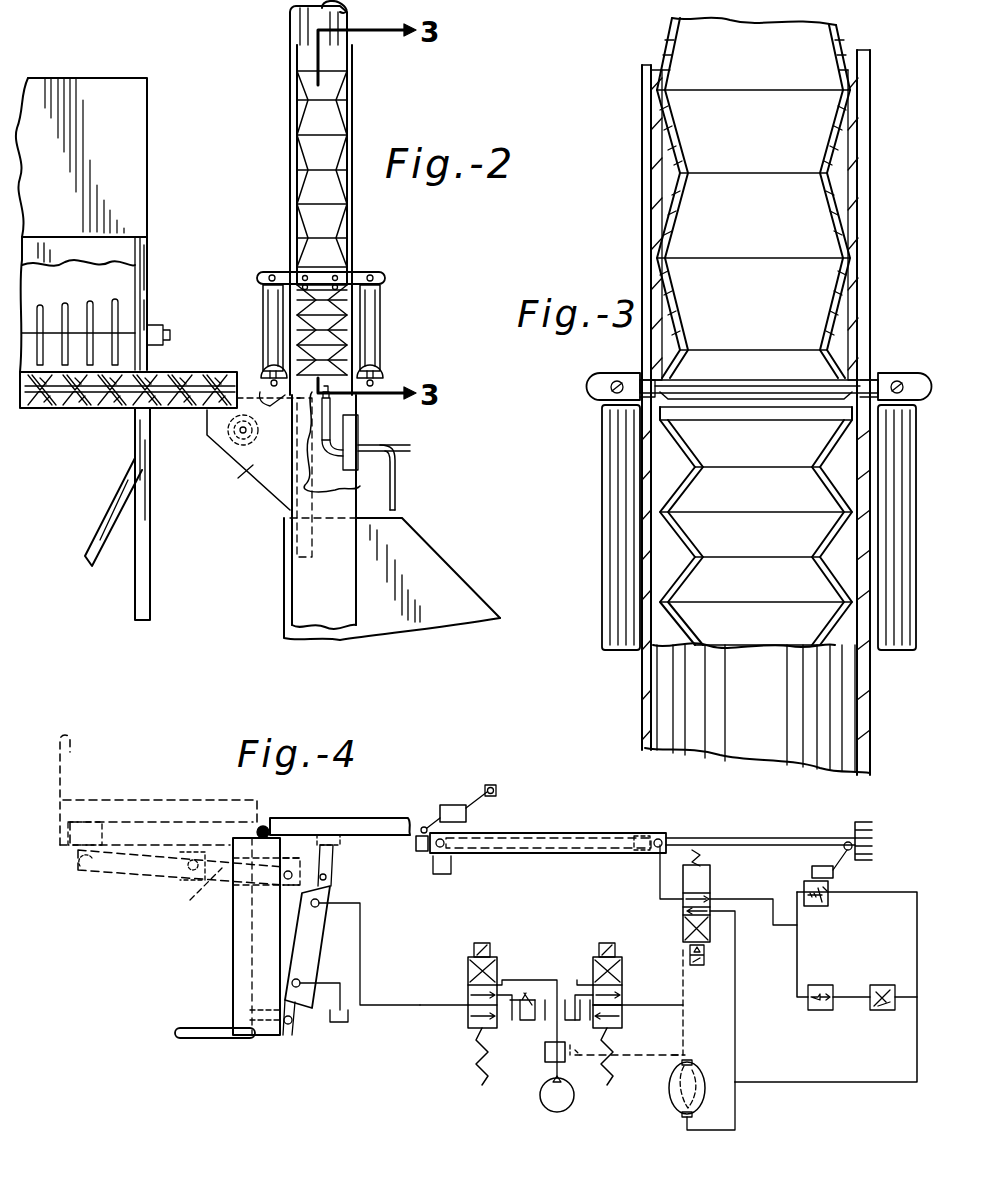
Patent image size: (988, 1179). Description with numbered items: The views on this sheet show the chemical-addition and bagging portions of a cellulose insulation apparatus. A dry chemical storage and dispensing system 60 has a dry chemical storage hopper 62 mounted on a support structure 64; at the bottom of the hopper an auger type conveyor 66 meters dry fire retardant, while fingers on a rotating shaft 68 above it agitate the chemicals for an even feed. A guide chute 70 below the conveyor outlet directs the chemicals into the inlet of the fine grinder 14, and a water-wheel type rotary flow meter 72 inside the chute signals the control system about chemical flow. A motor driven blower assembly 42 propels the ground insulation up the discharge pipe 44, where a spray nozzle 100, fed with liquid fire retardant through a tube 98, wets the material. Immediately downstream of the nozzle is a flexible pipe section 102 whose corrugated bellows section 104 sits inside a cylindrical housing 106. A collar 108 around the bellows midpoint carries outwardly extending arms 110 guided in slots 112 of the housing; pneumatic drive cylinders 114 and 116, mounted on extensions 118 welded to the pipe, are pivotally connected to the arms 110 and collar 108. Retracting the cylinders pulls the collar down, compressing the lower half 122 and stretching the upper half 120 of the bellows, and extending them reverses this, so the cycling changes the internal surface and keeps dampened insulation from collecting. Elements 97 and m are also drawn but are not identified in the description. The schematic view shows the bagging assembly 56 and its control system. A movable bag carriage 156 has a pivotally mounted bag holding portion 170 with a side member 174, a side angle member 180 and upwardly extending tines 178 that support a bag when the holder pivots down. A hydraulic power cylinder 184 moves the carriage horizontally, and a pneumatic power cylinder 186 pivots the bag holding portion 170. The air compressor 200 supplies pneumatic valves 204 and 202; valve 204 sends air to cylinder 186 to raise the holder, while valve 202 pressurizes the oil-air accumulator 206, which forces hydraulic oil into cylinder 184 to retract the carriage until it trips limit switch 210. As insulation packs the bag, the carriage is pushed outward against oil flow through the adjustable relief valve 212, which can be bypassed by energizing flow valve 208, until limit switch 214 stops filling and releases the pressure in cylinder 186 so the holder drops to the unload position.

In FIG. 2, the dry chemical storage and dispensing system 60 is at (70, 48).
In FIG. 2, the dry chemical storage hopper 62 is at (120, 78).
In FIG. 2, the rotating shaft with agitating fingers 68 is at (120, 333).
In FIG. 2, the auger type conveyor 66 is at (160, 378).
In FIG. 2, the support structure 64 is at (135, 594).
In FIG. 2, the rotary flow meter 72 is at (240, 432).
In FIG. 2, the guide chute 70 is at (248, 460).
In FIG. 2, the discharge pipe 44 is at (288, 26).
In FIG. 2, the cylindrical housing 106 is at (290, 148).
In FIG. 3, the cylindrical housing 106 is at (870, 52).
In FIG. 2, the corrugated bellows section 104 is at (336, 128).
In FIG. 3, the corrugated bellows section 104 is at (825, 200).
In FIG. 2, the flexible pipe section 102 is at (362, 146).
In FIG. 3, the flexible pipe section 102 is at (628, 248).
In FIG. 2, the slots 112 is at (290, 210).
In FIG. 3, the slots 112 is at (870, 156).
In FIG. 2, the outwardly extending arms 110 is at (262, 272).
In FIG. 3, the outwardly extending arms 110 is at (604, 378).
In FIG. 2, the collar 108 is at (328, 282).
In FIG. 3, the collar 108 is at (855, 380).
In FIG. 2, the pneumatic drive cylinder 116 is at (263, 318).
In FIG. 3, the pneumatic drive cylinder 116 is at (610, 500).
In FIG. 2, the pneumatic drive cylinder 114 is at (380, 318).
In FIG. 3, the pneumatic drive cylinder 114 is at (900, 622).
In FIG. 2, the extensions 118 is at (262, 390).
In FIG. 2, the spray nozzle 100 is at (360, 420).
In FIG. 2, the hydraulic line 97 is at (410, 444).
In FIG. 2, the tube 98 is at (396, 488).
In FIG. 2, the grinder 14 is at (428, 560).
In FIG. 2, the motor driven blower assembly 42 is at (315, 594).
In FIG. 3, the upper half of bellows 120 is at (672, 42).
In FIG. 3, the motor m is at (651, 154).
In FIG. 3, the lower half of bellows 122 is at (720, 628).
In FIG. 4, the bagging assembly 56 is at (196, 946).
In FIG. 4, the tines 178 is at (66, 752).
In FIG. 4, the side angle member 180 is at (126, 806).
In FIG. 4, the side member 174 is at (168, 832).
In FIG. 4, the bag holding portion 170 is at (240, 980).
In FIG. 4, the bag carriage 156 is at (382, 826).
In FIG. 4, the pneumatic power cylinder 186 is at (316, 960).
In FIG. 4, the hydraulic power cylinder 184 is at (552, 838).
In FIG. 4, the limit switch 214 is at (454, 805).
In FIG. 4, the flow valve 208 is at (706, 882).
In FIG. 4, the limit switch 210 is at (833, 874).
In FIG. 4, the adjustable relief valve 212 is at (822, 894).
In FIG. 4, the air valve 204 is at (470, 962).
In FIG. 4, the pneumatic valve 202 is at (598, 964).
In FIG. 4, the air compressor 200 is at (552, 1108).
In FIG. 4, the oil-air accumulator 206 is at (672, 1100).